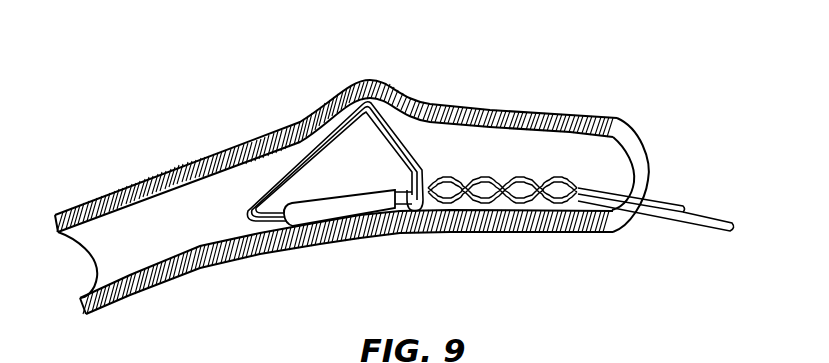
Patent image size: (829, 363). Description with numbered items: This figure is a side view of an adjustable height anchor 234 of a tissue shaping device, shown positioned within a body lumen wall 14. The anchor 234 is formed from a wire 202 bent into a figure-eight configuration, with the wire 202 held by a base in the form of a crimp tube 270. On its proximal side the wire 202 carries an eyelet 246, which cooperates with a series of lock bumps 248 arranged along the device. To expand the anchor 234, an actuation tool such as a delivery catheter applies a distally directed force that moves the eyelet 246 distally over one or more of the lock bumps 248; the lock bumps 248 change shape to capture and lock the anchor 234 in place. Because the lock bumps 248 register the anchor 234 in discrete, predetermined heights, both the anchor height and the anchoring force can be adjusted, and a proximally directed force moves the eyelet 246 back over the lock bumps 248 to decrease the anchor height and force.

The body lumen wall 14 is at (170, 172).
The wire 202 is at (387, 97).
The adjustable height anchor 234 is at (436, 152).
The eyelet 246 is at (417, 228).
The lock bumps 248 is at (450, 233).
The crimp tube 270 is at (318, 212).